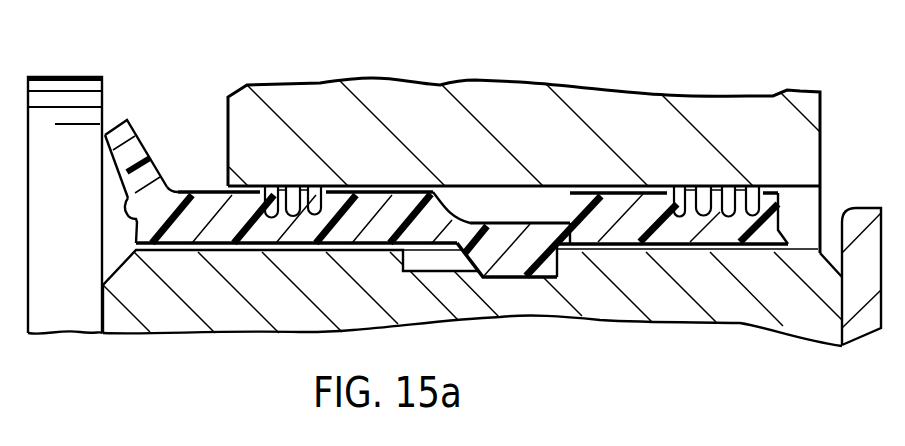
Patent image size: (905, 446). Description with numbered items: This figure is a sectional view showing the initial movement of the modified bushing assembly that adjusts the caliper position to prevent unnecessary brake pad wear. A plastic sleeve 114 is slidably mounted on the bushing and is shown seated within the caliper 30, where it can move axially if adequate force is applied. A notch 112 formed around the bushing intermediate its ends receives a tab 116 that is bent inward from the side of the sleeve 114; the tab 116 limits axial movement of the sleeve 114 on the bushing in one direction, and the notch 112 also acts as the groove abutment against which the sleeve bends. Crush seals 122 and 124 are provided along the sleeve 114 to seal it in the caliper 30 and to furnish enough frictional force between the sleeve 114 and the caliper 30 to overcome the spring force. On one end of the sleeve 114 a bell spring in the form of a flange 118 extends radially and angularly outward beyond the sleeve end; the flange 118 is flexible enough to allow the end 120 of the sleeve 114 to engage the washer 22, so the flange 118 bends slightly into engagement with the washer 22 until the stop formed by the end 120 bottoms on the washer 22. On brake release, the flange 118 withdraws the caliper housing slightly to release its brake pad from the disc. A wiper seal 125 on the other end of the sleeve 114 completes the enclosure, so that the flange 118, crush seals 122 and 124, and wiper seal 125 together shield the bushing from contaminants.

The washer 22 is at (55, 79).
The caliper 30 is at (638, 96).
The notch 112 is at (405, 271).
The plastic sleeve 114 is at (217, 237).
The tab 116 is at (533, 238).
The flange 118 is at (120, 117).
The end of the sleeve 120 is at (162, 178).
The crush seal 122 is at (297, 180).
The crush seal 124 is at (700, 179).
The wiper seal 125 is at (790, 246).